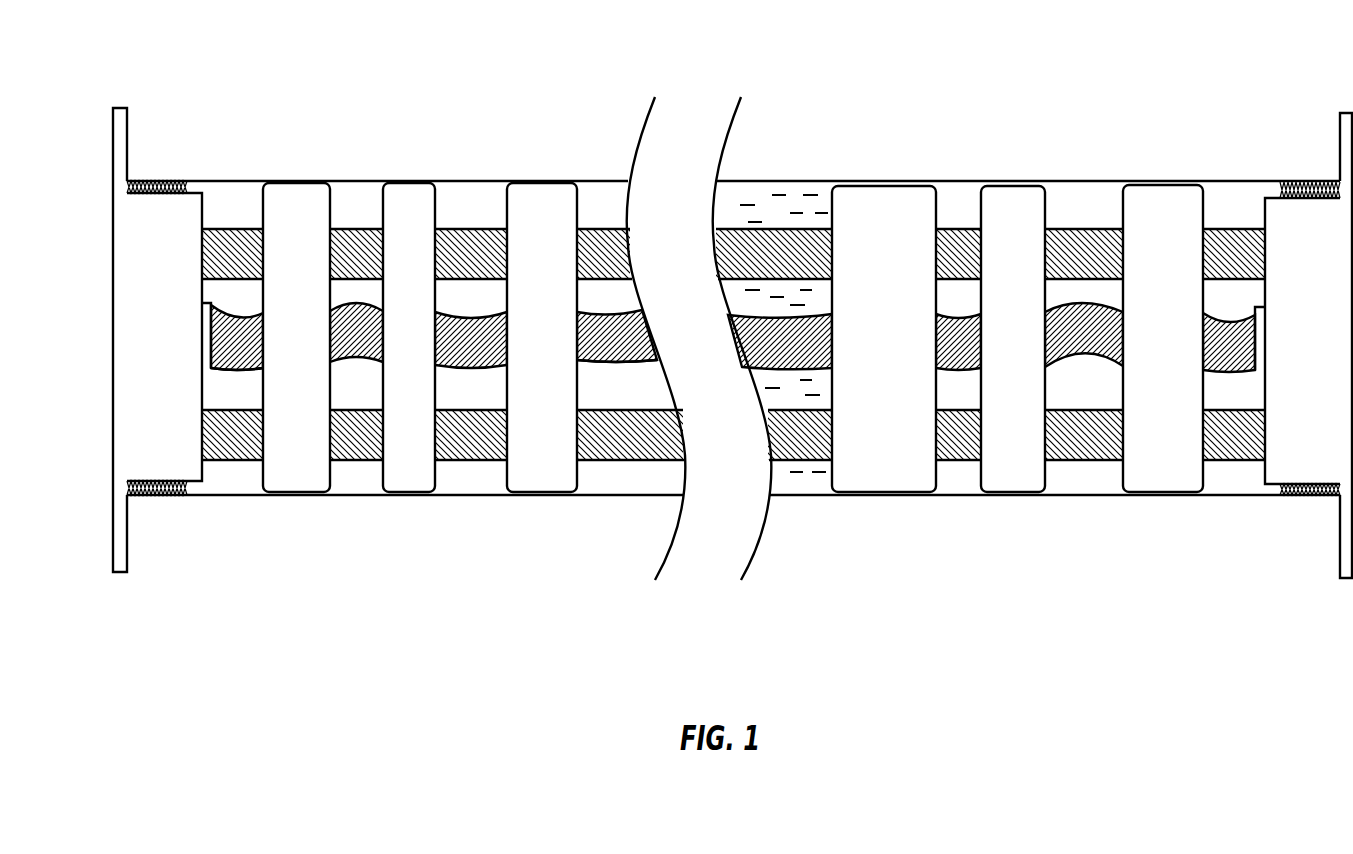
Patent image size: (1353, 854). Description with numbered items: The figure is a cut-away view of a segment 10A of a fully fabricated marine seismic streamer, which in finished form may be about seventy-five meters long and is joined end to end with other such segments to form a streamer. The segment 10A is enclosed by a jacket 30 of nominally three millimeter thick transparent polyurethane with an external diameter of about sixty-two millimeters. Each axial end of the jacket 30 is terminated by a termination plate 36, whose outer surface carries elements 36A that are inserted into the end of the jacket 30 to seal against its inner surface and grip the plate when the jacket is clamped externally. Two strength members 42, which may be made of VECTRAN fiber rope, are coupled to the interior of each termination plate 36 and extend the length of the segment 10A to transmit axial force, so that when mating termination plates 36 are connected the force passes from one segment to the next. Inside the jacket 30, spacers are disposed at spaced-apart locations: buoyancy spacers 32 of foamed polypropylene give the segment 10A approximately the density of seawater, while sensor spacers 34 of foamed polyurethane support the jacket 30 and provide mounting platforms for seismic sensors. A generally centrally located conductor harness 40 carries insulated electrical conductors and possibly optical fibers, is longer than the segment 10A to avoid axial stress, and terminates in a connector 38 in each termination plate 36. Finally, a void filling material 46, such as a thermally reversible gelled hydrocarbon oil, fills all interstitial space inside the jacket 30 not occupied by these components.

The streamer segment 10A is at (573, 82).
The jacket 30 is at (481, 174).
The buoyancy spacers 32 is at (298, 190).
The sensor spacers 34 is at (543, 187).
The termination plate 36 is at (125, 458).
The sealing elements 36A is at (162, 181).
The connector 38 is at (212, 305).
The conductor harness 40 is at (254, 370).
The strength members 42 is at (346, 204).
The void filling material 46 is at (797, 474).